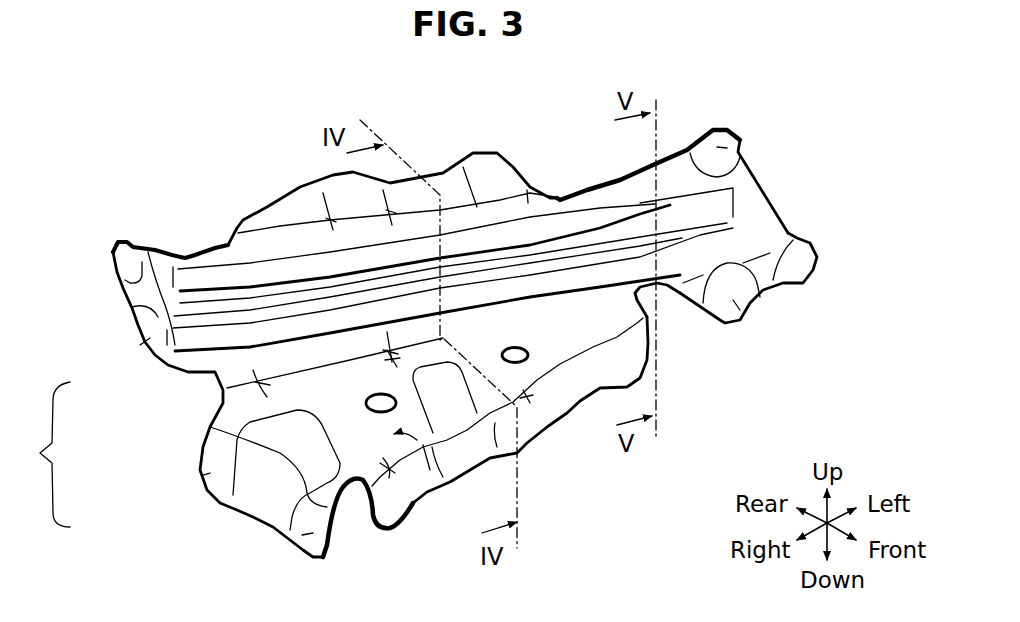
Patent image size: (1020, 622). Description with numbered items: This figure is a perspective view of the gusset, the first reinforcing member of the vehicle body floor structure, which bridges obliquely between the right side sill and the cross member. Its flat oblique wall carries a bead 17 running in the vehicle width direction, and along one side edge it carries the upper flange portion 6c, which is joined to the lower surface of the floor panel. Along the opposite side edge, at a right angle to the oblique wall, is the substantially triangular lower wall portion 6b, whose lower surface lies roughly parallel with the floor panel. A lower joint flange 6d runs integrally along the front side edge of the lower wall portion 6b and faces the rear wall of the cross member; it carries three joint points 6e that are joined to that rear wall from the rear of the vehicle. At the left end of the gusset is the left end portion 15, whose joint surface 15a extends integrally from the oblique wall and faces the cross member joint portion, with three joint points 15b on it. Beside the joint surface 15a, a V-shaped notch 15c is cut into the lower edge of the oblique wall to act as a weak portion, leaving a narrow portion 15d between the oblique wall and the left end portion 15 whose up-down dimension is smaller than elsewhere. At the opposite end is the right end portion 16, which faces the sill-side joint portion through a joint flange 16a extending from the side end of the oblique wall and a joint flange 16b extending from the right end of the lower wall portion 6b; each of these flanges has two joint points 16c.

The lower wall portion 6b is at (423, 445).
The upper flange portion 6c is at (445, 180).
The lower joint flange 6d is at (577, 410).
The joint points 6e is at (560, 190).
The left end portion 15 is at (777, 193).
The joint surface 15a is at (775, 222).
The joint points 15b is at (740, 140).
The notch 15c is at (660, 287).
The narrow portion 15d is at (607, 180).
The right end portion 16 is at (173, 435).
The joint flange 16a is at (138, 325).
The joint flange 16b is at (210, 495).
The joint points 16c is at (120, 267).
The bead 17 is at (295, 300).